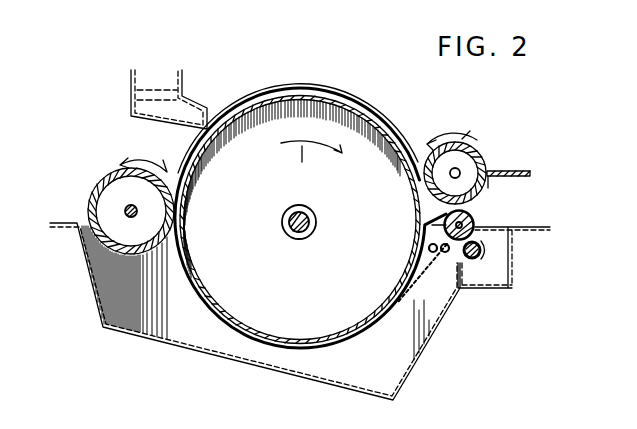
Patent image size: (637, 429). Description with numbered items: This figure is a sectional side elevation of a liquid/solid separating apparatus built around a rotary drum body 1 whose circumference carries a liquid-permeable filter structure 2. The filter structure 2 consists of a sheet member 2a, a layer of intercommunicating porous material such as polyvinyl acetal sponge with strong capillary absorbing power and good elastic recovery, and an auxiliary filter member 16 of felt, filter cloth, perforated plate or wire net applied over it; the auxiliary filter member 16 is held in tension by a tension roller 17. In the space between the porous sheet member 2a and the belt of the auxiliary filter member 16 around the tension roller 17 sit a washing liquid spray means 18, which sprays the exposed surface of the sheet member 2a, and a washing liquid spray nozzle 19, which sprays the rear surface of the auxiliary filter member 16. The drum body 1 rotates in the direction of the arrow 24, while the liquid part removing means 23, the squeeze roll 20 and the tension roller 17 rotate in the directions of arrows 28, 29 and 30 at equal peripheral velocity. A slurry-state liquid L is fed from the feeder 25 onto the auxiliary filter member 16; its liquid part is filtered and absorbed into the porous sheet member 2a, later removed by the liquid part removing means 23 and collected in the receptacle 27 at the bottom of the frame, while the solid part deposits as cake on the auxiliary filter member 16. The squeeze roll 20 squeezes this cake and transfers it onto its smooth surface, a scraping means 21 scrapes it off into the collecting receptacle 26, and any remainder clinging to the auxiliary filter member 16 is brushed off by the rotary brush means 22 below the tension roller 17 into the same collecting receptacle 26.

The rotary drum body 1 is at (207, 304).
The liquid-permeable filter structure 2 is at (348, 342).
The sheet member 2a is at (337, 104).
The auxiliary filter member 16 is at (203, 315).
The tension roller 17 is at (477, 219).
The washing liquid spray means 18 is at (428, 250).
The washing liquid spray nozzle 19 is at (452, 252).
The squeeze roll 20 is at (483, 160).
The scraping means 21 is at (530, 177).
The rotary brush means 22 is at (472, 262).
The liquid part removing means 23 is at (112, 199).
The arrow 24 is at (303, 159).
The feeder 25 is at (192, 107).
The collecting receptacle 26 is at (513, 250).
The receptacle 27 is at (205, 352).
The arrow 28 is at (147, 152).
The arrow 29 is at (463, 128).
The arrow 30 is at (446, 214).
The slurry-state liquid L is at (132, 81).